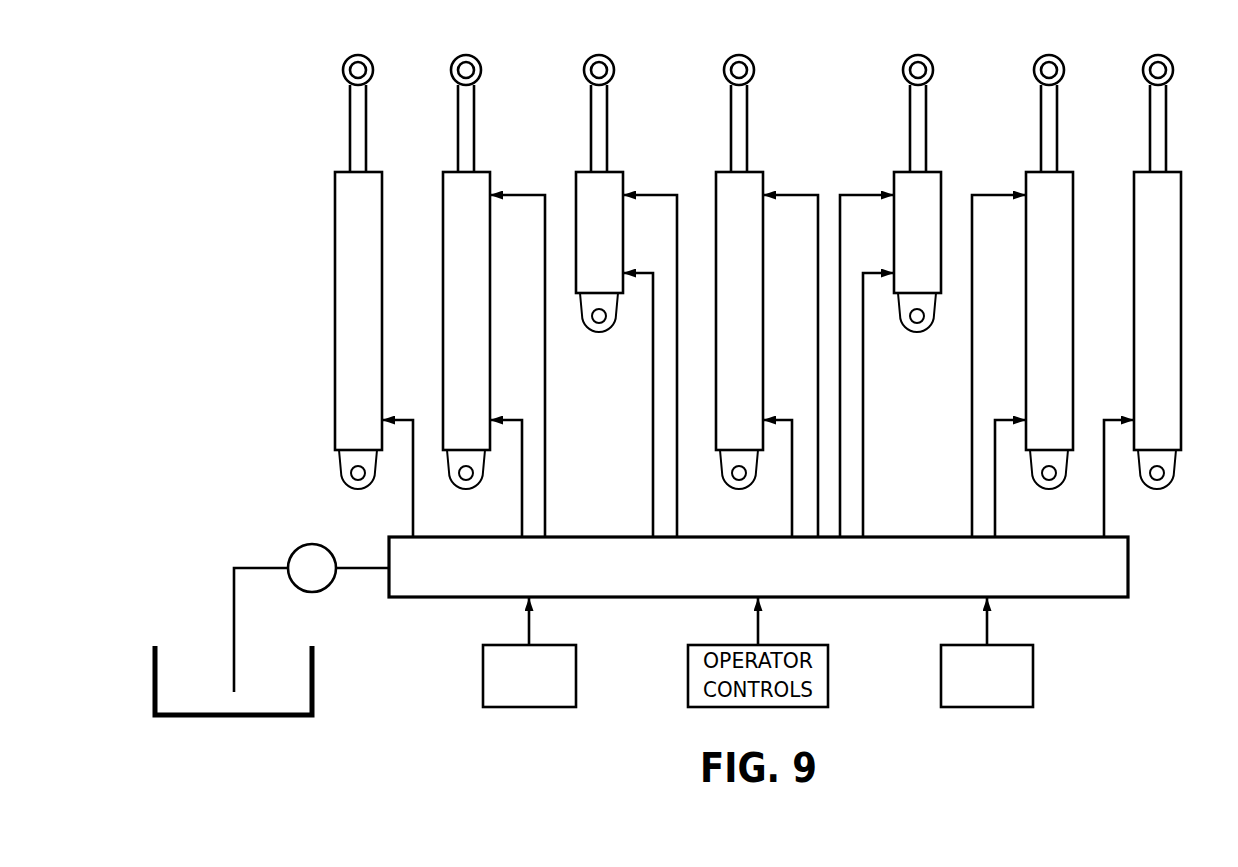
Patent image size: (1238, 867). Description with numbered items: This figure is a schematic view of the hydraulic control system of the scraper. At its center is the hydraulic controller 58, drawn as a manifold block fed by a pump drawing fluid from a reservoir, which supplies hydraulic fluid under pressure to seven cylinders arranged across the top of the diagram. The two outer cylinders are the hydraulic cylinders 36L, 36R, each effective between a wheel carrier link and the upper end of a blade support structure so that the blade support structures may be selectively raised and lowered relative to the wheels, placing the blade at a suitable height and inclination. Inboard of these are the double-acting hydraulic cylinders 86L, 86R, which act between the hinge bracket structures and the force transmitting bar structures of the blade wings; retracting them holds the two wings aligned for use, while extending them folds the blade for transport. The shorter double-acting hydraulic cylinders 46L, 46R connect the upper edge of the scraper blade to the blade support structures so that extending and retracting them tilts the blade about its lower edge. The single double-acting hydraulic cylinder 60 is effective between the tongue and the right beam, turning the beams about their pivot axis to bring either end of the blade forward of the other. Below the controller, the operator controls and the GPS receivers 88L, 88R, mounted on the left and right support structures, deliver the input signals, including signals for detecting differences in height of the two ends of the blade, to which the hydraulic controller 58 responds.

The hydraulic cylinder 36L is at (335, 197).
The hydraulic cylinder 36R is at (1181, 197).
The double-acting hydraulic cylinder 86L is at (443, 197).
The double-acting hydraulic cylinder 86R is at (1073, 197).
The double-acting hydraulic cylinder 46L is at (576, 197).
The double-acting hydraulic cylinder 46R is at (941, 197).
The double-acting hydraulic cylinder 60 is at (716, 197).
The hydraulic controller 58 is at (1128, 570).
The GPS receiver 88L is at (514, 690).
The GPS receiver 88R is at (971, 690).